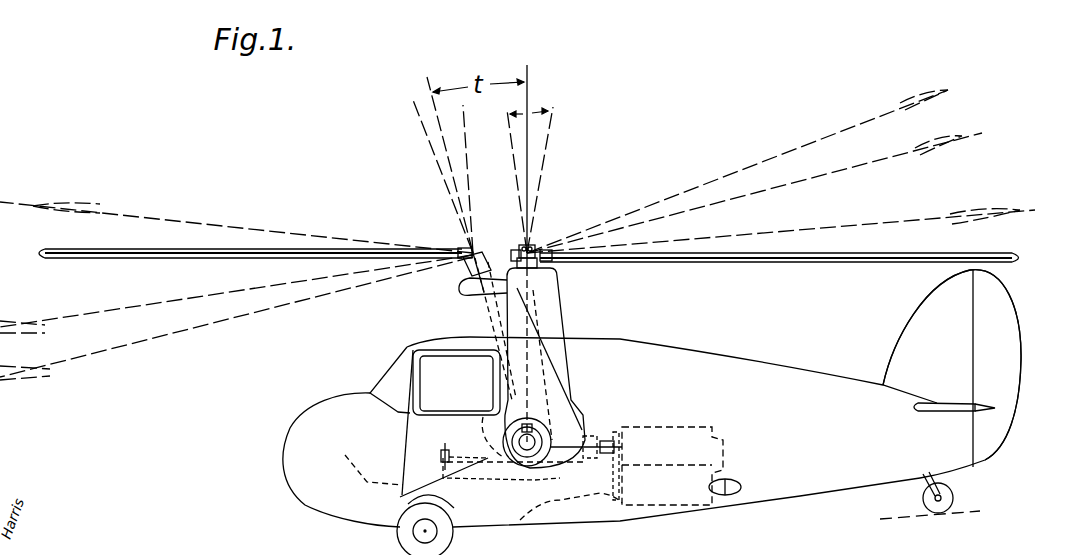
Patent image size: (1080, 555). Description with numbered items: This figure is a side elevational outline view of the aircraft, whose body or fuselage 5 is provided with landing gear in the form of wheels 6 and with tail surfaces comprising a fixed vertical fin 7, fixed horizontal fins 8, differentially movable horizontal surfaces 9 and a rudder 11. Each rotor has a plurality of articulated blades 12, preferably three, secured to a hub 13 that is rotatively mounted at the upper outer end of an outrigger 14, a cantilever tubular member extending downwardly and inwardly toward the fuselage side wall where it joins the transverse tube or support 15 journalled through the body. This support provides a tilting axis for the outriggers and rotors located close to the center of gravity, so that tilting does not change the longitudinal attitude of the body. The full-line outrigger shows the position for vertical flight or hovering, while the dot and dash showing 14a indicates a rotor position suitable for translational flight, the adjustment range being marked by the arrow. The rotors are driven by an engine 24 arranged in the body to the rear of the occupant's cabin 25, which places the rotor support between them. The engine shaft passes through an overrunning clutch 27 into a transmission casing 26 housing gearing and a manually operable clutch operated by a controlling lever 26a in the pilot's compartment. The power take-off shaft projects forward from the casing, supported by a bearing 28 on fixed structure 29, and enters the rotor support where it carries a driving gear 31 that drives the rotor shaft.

The body or fuselage 5 is at (652, 398).
The wheels 6 is at (452, 538).
The fixed vertical fin 7 is at (918, 313).
The fixed horizontal fins 8 is at (925, 412).
The differentially movable horizontal surface 9 is at (985, 410).
The rudder 11 is at (1005, 327).
The articulated blades 12 is at (106, 250).
The hub 13 is at (535, 246).
The outrigger 14 is at (556, 318).
The outrigger (translational flight position) 14a is at (480, 316).
The transverse tube or support 15 is at (516, 430).
The engine 24 is at (694, 427).
The occupant's cabin 25 is at (450, 423).
The transmission casing 26 is at (590, 432).
The controlling lever 26a is at (443, 447).
The overrunning clutch 27 is at (606, 440).
The bearing 28 is at (568, 388).
The fixed structure 29 is at (553, 474).
The driving gear 31 is at (531, 423).